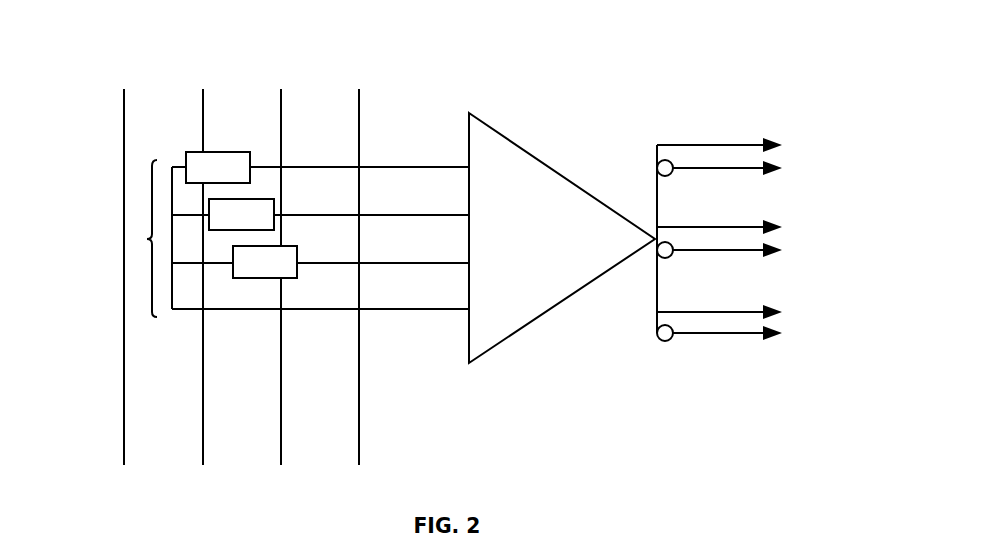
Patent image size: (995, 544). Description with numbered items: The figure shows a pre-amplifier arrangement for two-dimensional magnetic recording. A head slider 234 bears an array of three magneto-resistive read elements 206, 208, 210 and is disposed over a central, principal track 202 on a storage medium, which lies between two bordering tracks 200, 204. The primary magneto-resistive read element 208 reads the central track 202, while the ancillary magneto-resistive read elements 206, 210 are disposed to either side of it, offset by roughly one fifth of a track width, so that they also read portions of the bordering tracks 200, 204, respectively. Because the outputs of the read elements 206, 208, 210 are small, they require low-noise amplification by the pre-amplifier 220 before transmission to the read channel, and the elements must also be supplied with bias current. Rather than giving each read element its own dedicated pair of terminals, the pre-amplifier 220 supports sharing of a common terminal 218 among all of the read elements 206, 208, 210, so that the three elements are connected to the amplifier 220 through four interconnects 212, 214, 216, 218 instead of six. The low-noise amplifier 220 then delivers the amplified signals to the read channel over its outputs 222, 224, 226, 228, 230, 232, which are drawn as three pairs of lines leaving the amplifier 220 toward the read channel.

The bordering track 200 is at (147, 72).
The central track 202 is at (232, 72).
The bordering track 204 is at (311, 72).
The ancillary magneto-resistive read element 206 is at (212, 150).
The primary magneto-resistive read element 208 is at (274, 207).
The ancillary magneto-resistive read element 210 is at (297, 256).
The interconnect 212 is at (388, 166).
The interconnect 214 is at (398, 213).
The interconnect 216 is at (408, 261).
The common terminal 218 is at (382, 311).
The low-noise amplifier 220 is at (522, 150).
The read channel output 222 is at (767, 143).
The read channel output 224 is at (772, 160).
The read channel output 226 is at (767, 226).
The read channel output 228 is at (772, 243).
The read channel output 230 is at (767, 310).
The read channel output 232 is at (772, 328).
The head slider 234 is at (147, 239).